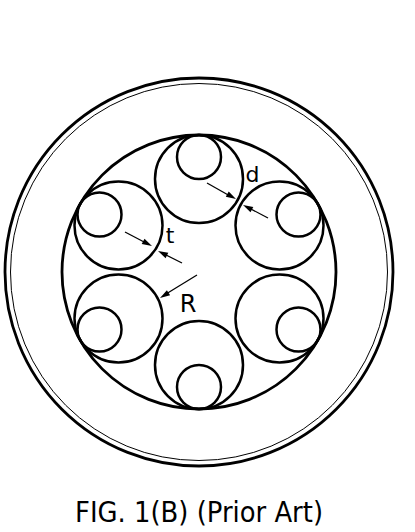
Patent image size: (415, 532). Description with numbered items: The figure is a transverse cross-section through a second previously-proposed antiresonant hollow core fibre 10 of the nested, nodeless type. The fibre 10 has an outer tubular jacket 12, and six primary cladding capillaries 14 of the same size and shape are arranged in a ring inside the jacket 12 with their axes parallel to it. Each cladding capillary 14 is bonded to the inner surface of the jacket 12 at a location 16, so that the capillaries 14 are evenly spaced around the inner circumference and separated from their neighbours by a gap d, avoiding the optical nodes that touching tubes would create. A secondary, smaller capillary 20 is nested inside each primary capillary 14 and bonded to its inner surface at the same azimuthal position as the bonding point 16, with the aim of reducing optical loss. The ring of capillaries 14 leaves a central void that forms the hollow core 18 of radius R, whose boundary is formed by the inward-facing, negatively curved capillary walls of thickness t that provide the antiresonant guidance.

The fibre 10 is at (96, 76).
The outer tubular jacket 12 is at (307, 437).
The cladding capillary 14 is at (243, 167).
The location of bonding 16 is at (197, 135).
The hollow core 18 is at (229, 257).
The secondary capillary 20 is at (172, 165).